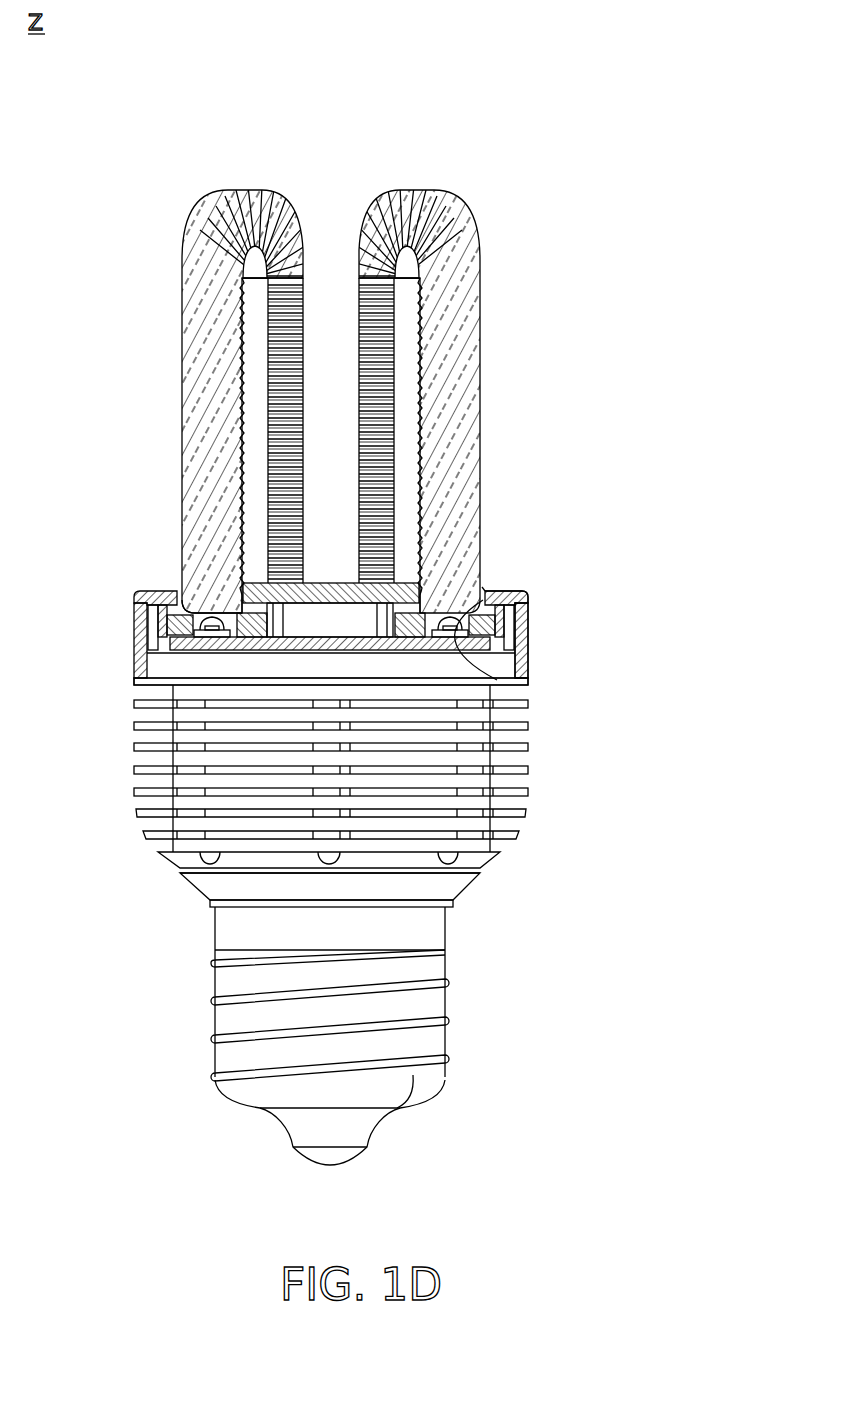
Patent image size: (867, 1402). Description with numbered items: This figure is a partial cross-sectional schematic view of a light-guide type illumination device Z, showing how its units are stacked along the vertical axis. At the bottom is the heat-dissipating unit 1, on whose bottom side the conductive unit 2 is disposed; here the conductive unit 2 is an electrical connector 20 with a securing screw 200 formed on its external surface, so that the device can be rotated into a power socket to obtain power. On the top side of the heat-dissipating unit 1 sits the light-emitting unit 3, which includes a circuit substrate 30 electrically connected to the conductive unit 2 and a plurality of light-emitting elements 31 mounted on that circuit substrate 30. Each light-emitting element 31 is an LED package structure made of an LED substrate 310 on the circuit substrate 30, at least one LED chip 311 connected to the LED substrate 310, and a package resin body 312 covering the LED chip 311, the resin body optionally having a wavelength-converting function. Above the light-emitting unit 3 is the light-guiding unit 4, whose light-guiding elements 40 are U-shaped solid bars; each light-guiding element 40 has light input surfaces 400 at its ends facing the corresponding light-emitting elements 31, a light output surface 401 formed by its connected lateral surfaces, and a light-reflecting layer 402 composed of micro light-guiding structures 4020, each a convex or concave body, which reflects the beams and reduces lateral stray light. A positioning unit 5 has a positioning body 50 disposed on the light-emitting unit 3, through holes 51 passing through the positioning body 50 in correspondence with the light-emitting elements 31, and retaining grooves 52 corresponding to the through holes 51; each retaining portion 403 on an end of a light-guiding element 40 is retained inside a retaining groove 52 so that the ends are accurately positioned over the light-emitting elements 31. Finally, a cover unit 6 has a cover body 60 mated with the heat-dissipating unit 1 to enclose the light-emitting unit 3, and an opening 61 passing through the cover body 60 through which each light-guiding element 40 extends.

The heat-dissipating unit 1 is at (103, 776).
The conductive unit 2 is at (528, 978).
The electrical connector 20 is at (423, 1003).
The securing screw 200 is at (432, 1062).
The light-emitting unit 3 is at (683, 643).
The circuit substrate 30 is at (385, 640).
The light-emitting element 31 is at (634, 600).
The LED substrate 310 is at (490, 680).
The LED chip 311 is at (527, 637).
The package resin body 312 is at (525, 605).
The light-guiding unit 4 is at (218, 100).
The light-guiding element 40 is at (207, 205).
The light input surface 400 is at (197, 605).
The light output surface 401 is at (228, 197).
The light-reflecting layer 402 is at (330, 137).
The micro light-guiding structure 4020 is at (292, 222).
The retaining portion 403 is at (140, 603).
The positioning unit 5 is at (45, 637).
The positioning body 50 is at (182, 650).
The through hole 51 is at (192, 620).
The retaining groove 52 is at (258, 617).
The cover unit 6 is at (542, 523).
The cover body 60 is at (508, 590).
The opening 61 is at (478, 592).